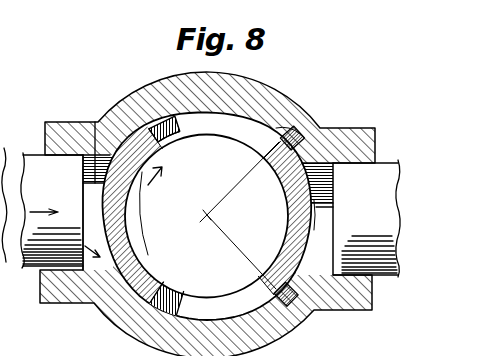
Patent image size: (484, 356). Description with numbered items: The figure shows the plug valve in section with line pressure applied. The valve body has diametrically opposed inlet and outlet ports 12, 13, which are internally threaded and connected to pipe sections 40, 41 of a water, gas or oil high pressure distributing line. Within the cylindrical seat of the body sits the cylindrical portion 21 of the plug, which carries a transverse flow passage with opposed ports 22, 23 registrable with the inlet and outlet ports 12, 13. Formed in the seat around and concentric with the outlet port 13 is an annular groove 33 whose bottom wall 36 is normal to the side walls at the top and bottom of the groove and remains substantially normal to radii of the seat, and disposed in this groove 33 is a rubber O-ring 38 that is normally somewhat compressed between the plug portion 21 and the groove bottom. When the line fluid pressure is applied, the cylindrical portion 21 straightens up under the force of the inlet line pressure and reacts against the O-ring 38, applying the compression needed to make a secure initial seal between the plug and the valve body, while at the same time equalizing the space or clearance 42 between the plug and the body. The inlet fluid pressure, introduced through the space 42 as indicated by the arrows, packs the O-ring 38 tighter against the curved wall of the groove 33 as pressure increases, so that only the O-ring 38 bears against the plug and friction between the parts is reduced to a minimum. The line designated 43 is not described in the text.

The inlet port 12 is at (95, 122).
The outlet port 13 is at (318, 194).
The cylindrical portion 21 is at (138, 256).
The port 22 is at (186, 302).
The port 23 is at (172, 138).
The annular groove 33 is at (290, 128).
The bottom wall 36 is at (306, 150).
The O-ring 38 is at (278, 160).
The pipe section 40 is at (33, 158).
The pipe section 41 is at (390, 277).
The space or clearance 42 is at (224, 137).
The vane center line 43 is at (275, 265).